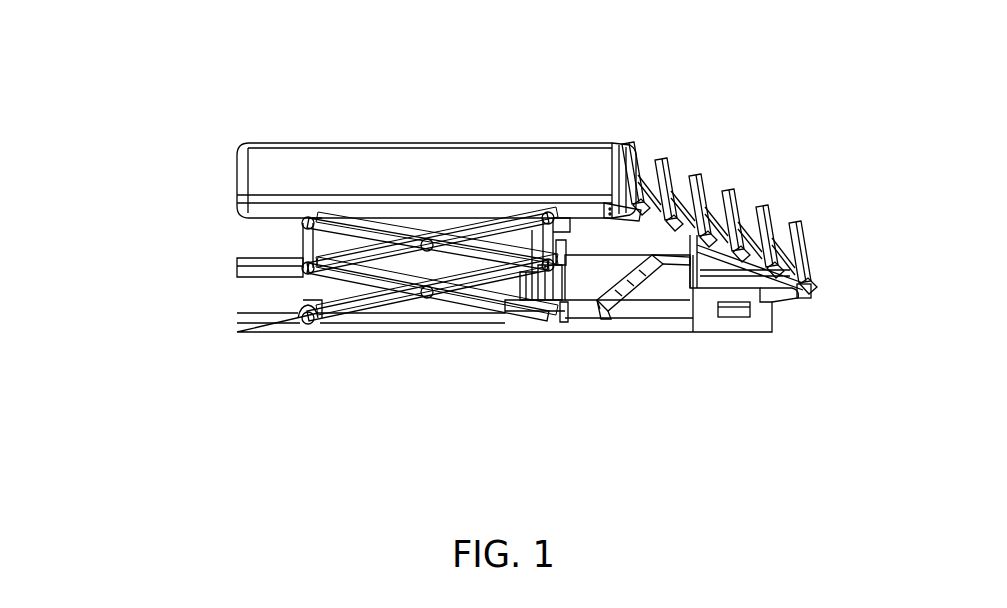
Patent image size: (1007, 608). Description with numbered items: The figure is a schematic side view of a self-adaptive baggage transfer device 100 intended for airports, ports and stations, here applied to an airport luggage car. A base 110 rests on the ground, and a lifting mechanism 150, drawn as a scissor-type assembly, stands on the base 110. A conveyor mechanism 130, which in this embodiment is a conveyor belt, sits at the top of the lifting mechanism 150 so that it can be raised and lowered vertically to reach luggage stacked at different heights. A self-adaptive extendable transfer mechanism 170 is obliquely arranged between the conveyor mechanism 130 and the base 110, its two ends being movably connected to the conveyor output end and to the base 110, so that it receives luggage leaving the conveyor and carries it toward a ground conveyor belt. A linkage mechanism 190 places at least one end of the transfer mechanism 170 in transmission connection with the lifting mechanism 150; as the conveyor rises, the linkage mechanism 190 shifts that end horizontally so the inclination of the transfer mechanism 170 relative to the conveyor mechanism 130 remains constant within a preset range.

The self-adaptive baggage transfer device 100 is at (535, 34).
The base 110 is at (457, 330).
The conveyor mechanism 130 is at (285, 163).
The lifting mechanism 150 is at (250, 242).
The self-adaptive extendable transfer mechanism 170 is at (740, 162).
The linkage mechanism 190 is at (672, 312).